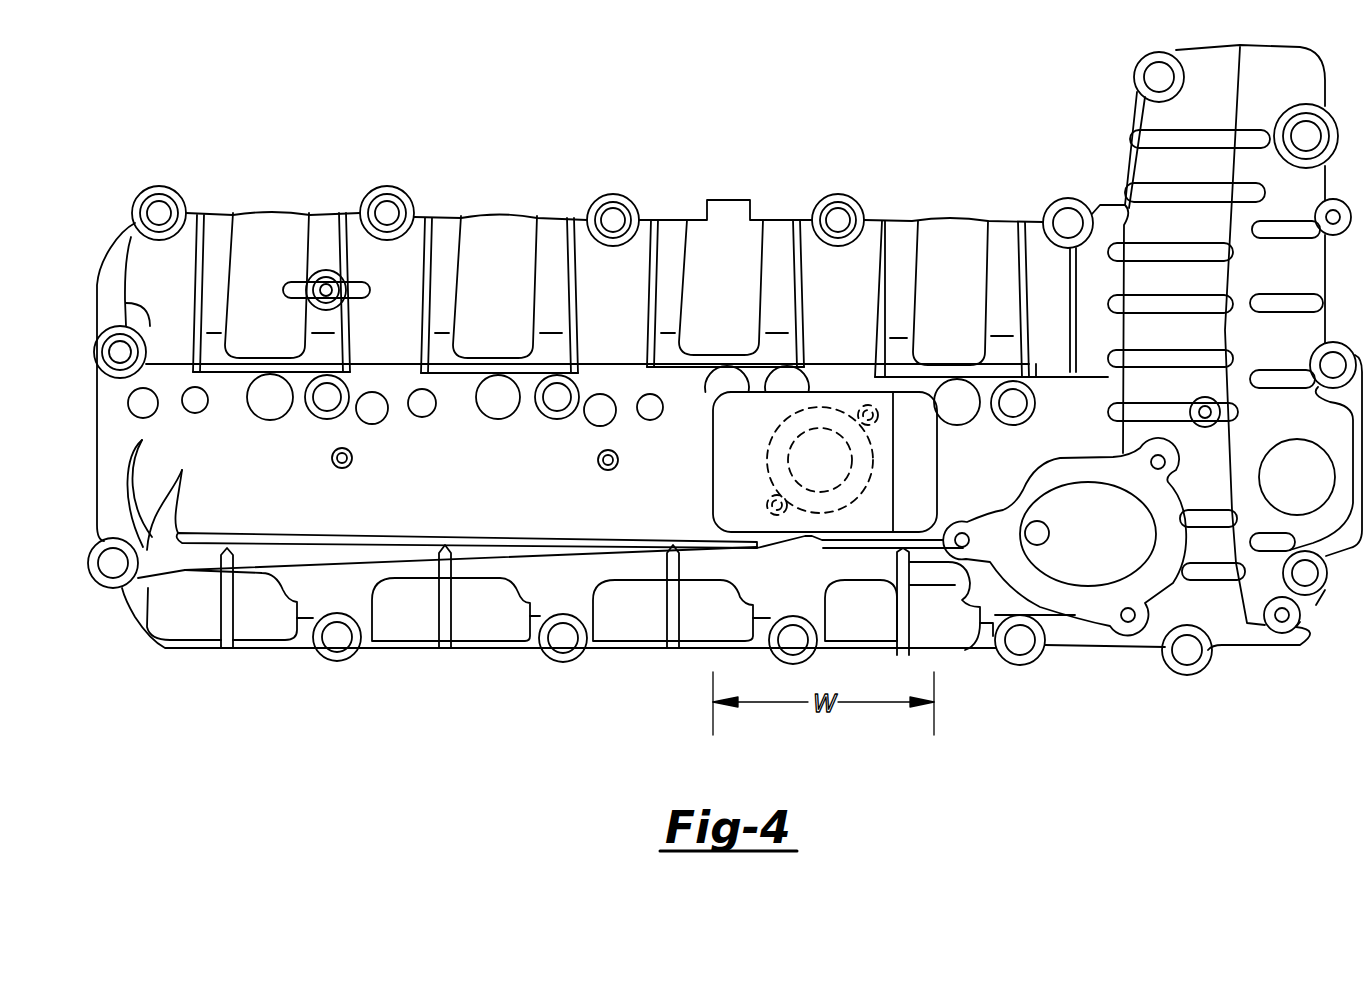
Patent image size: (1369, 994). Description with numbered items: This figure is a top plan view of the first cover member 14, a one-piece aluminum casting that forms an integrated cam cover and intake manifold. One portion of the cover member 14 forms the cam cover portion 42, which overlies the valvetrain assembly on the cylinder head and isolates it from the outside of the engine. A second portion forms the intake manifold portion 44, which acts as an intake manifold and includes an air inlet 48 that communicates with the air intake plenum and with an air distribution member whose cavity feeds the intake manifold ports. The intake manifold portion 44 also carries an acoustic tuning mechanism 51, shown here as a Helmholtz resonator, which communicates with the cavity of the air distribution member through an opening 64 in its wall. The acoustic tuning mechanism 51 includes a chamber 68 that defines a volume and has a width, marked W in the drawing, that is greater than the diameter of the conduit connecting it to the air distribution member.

The first cover member 14 is at (282, 182).
The cam cover portion 42 is at (108, 290).
The intake manifold portion 44 is at (145, 630).
The air inlet 48 is at (1090, 567).
The acoustic tuning mechanism 51 is at (713, 530).
The opening 64 is at (838, 487).
The chamber 68 is at (938, 478).